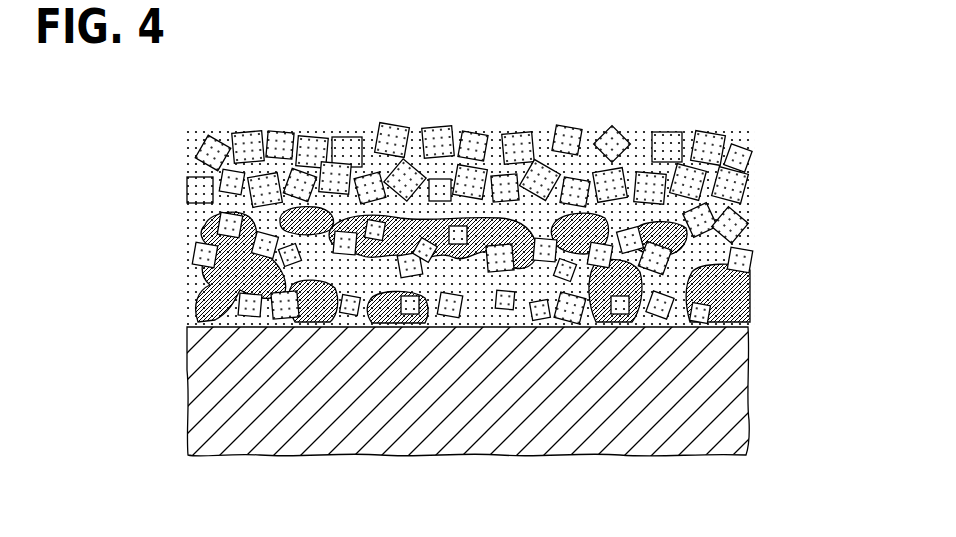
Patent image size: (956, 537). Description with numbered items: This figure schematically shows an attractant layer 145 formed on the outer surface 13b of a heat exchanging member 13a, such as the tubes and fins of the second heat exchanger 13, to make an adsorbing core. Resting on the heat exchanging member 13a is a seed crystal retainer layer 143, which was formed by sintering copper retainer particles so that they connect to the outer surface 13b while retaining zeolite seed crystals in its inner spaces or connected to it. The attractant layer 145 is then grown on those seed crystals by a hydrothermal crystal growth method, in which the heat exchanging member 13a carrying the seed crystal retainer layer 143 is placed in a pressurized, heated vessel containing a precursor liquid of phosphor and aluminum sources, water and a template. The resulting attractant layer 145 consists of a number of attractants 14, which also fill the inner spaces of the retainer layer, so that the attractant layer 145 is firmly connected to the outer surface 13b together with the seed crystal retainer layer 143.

The second heat exchanger 13 is at (163, 155).
The heat exchanging member 13a is at (537, 440).
The outer surface 13b is at (210, 268).
The attractant 14 is at (526, 181).
The seed crystal retainer layer 143 is at (368, 163).
The attractant layer 145 is at (756, 128).